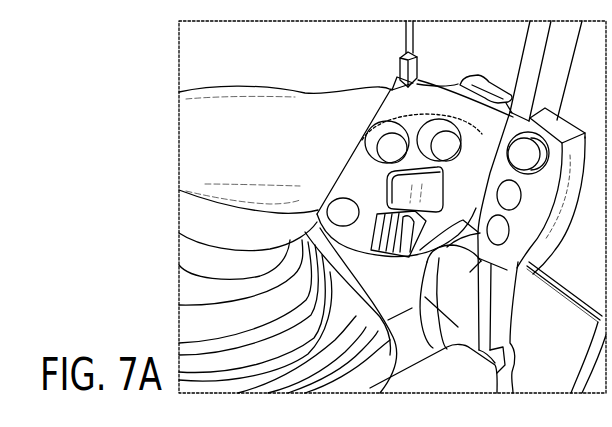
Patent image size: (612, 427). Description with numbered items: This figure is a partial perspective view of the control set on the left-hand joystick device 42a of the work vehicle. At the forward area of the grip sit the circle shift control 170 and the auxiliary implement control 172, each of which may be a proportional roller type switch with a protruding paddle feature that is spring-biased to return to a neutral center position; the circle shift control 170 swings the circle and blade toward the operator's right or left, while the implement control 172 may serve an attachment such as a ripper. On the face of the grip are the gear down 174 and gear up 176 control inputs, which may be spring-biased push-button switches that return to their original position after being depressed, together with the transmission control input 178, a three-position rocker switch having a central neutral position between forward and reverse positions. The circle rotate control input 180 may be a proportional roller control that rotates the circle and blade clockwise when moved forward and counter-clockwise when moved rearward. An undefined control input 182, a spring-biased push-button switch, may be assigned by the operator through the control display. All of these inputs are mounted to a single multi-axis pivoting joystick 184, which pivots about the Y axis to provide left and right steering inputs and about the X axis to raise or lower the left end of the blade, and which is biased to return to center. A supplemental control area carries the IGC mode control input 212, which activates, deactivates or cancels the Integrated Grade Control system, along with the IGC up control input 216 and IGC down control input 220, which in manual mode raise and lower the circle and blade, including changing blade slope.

The left-hand joystick device 42a is at (305, 89).
The circle shift control 170 is at (403, 82).
The auxiliary implement control 172 is at (482, 88).
The gear down control input 174 is at (387, 146).
The gear up control input 176 is at (447, 145).
The transmission control input 178 is at (398, 190).
The circle rotate control input 180 is at (399, 255).
The undefined control input 182 is at (340, 212).
The multi-axis pivoting joystick 184 is at (191, 233).
The IGC mode control input 212 is at (516, 153).
The IGC up control input 216 is at (510, 208).
The IGC down control input 220 is at (500, 242).